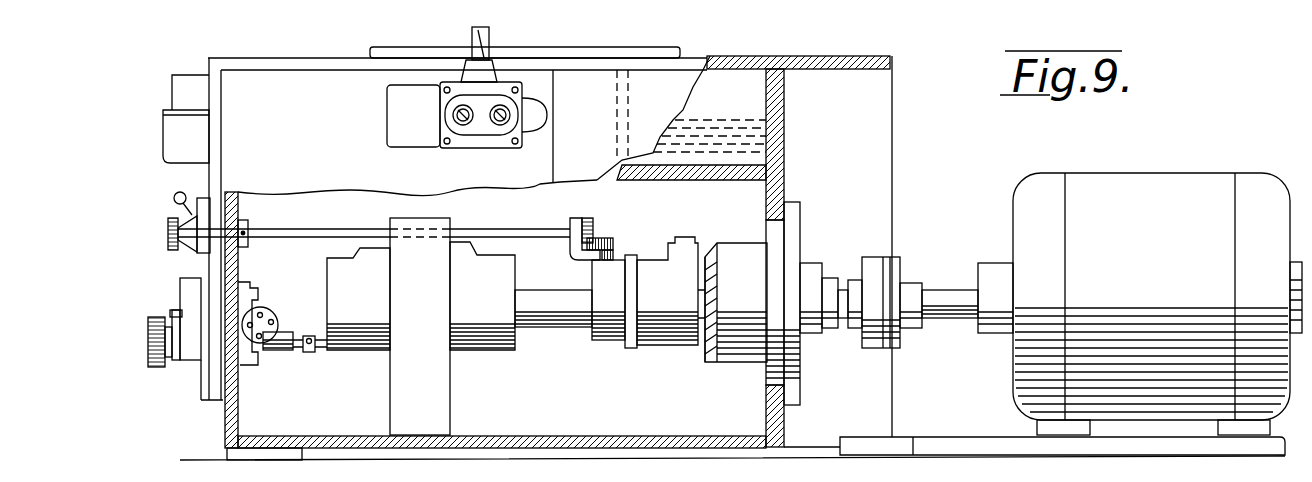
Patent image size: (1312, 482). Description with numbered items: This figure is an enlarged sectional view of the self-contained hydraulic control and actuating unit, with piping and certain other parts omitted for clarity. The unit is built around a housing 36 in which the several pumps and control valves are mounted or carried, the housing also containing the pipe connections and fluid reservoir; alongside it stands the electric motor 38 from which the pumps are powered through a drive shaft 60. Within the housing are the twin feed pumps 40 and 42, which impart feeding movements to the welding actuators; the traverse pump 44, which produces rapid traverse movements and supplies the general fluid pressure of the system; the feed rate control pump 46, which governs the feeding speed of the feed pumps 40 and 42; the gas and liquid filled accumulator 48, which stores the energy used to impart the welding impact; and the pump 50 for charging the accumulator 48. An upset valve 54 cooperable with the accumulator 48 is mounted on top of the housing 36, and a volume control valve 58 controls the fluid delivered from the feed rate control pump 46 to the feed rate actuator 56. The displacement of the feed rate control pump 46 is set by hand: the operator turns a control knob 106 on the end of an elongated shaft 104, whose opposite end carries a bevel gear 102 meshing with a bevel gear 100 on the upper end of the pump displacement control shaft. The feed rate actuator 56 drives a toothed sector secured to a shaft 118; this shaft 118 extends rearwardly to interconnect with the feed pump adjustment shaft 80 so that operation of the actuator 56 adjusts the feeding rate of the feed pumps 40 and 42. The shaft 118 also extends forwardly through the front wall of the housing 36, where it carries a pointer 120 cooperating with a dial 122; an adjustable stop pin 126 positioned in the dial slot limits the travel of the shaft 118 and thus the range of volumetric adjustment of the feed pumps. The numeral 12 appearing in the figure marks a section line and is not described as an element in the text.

The switch housing / section line 12 is at (376, 117).
The housing 36 is at (267, 60).
The electric motor 38 is at (1134, 188).
The feed pump 40 is at (368, 345).
The feed pump 42 is at (493, 350).
The traverse pump 44 is at (742, 355).
The feed rate control pump 46 is at (608, 340).
The accumulator 48 is at (753, 132).
The pump 50 is at (678, 345).
The upset valve 54 is at (403, 133).
The feed rate actuator 56 is at (272, 312).
The volume control valve 58 is at (178, 66).
The drive shaft 60 is at (553, 318).
The shaft 80 is at (323, 350).
The bevel gear 100 is at (607, 242).
The bevel gear 102 is at (560, 200).
The elongated shaft 104 is at (313, 233).
The control knob 106 is at (177, 196).
The shaft 118 is at (300, 357).
The pointer 120 is at (173, 348).
The dial 122 is at (180, 286).
The stop pin 126 is at (176, 312).